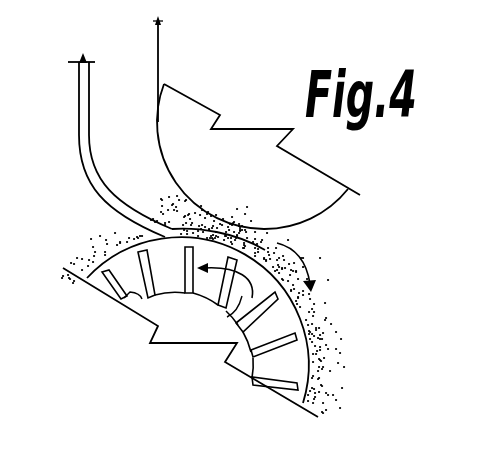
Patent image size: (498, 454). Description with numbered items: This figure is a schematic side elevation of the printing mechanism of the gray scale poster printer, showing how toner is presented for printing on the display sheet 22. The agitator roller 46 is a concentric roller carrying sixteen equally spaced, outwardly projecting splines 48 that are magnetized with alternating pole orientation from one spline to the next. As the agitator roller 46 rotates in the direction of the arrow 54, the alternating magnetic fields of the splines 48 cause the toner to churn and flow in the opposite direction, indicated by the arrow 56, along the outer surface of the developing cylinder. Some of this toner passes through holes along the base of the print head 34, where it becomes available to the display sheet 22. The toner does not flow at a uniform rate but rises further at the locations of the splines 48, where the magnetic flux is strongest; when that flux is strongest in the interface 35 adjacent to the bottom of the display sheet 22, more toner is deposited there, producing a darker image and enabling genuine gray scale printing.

The display sheet 22 is at (157, 55).
The print head 34 is at (78, 115).
The interface 35 is at (173, 217).
The splines 48 is at (97, 264).
The arrow (toner flow direction) 56 is at (290, 243).
The agitator roller 46 is at (122, 298).
The arrow (agitator roller rotation direction) 54 is at (228, 305).